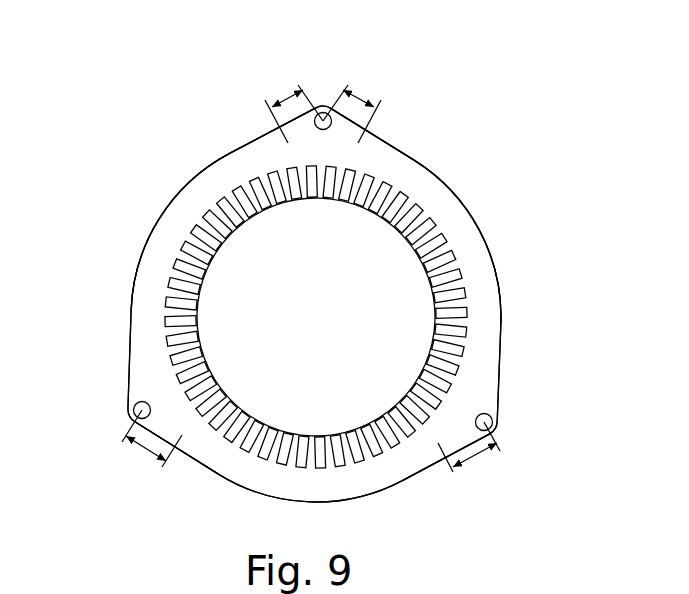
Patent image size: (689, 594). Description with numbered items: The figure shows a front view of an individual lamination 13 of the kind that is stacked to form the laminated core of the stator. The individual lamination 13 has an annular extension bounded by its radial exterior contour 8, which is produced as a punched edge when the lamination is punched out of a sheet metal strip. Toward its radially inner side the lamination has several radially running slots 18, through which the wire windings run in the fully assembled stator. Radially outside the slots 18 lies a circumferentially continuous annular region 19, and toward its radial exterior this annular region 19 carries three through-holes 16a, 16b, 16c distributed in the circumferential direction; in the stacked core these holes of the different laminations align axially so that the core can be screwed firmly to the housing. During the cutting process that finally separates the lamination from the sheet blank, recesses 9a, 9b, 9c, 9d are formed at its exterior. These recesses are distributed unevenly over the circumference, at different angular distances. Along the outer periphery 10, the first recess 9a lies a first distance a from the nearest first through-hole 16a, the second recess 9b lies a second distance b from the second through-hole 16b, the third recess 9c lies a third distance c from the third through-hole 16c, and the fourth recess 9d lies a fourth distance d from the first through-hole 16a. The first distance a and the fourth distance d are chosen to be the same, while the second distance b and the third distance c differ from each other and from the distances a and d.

The radial exterior contour 8 is at (440, 178).
The first recess 9a is at (273, 130).
The second recess 9b is at (186, 455).
The third recess 9c is at (442, 459).
The fourth recess 9d is at (370, 132).
The outer periphery 10 is at (176, 195).
The individual lamination 13 is at (506, 199).
The first through-hole 16a is at (323, 108).
The second through-hole 16b is at (136, 416).
The third through-hole 16c is at (497, 415).
The slot 18 is at (297, 202).
The annular region 19 is at (470, 255).
The first distance a is at (294, 110).
The second distance b is at (152, 442).
The third distance c is at (469, 451).
The fourth distance d is at (352, 110).